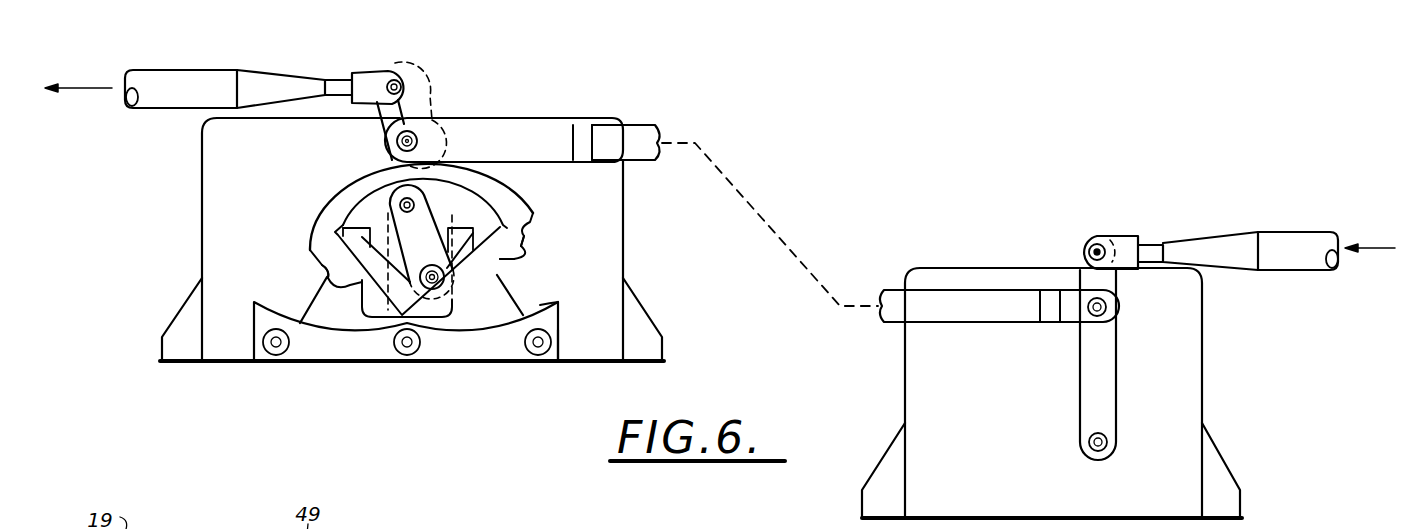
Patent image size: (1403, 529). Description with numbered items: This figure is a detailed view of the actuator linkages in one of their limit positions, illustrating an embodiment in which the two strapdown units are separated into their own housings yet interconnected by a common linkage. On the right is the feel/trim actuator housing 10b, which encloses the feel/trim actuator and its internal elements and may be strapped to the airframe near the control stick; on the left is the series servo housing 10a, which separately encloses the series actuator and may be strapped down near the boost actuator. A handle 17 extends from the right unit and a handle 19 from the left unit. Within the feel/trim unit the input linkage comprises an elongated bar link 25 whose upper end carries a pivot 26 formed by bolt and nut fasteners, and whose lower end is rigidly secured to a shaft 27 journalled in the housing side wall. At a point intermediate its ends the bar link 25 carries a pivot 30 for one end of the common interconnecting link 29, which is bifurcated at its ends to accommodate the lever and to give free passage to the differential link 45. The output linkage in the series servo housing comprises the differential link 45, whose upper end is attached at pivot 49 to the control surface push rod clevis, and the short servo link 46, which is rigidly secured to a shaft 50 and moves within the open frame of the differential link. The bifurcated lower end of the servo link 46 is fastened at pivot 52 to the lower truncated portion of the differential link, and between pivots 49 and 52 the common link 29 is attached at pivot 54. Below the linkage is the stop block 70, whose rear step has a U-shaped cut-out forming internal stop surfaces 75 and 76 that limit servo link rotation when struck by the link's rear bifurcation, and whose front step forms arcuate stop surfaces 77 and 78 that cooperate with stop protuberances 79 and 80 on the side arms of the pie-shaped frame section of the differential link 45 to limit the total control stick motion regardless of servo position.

The series servo housing 10a is at (180, 205).
The feel/trim actuator housing 10b is at (1218, 372).
The handle 17 is at (1304, 233).
The handle 19 is at (180, 72).
The bar link 25 is at (1118, 378).
The pivot 26 is at (1097, 242).
The shaft 27 is at (1118, 432).
The common interconnecting link 29 is at (638, 128).
The pivot 30 is at (1115, 305).
The differential link 45 is at (373, 170).
The servo link 46 is at (438, 222).
The pivot 49 is at (395, 74).
The shaft 50 is at (400, 207).
The pivot 52 is at (497, 280).
The pivot 54 is at (428, 130).
The stop block 70 is at (572, 325).
The stop surface 75 is at (523, 225).
The stop surface 76 is at (355, 230).
The arcuate stop surface 77 is at (560, 302).
The arcuate stop surface 78 is at (265, 300).
The stop protuberance 79 is at (527, 250).
The stop protuberance 80 is at (322, 278).